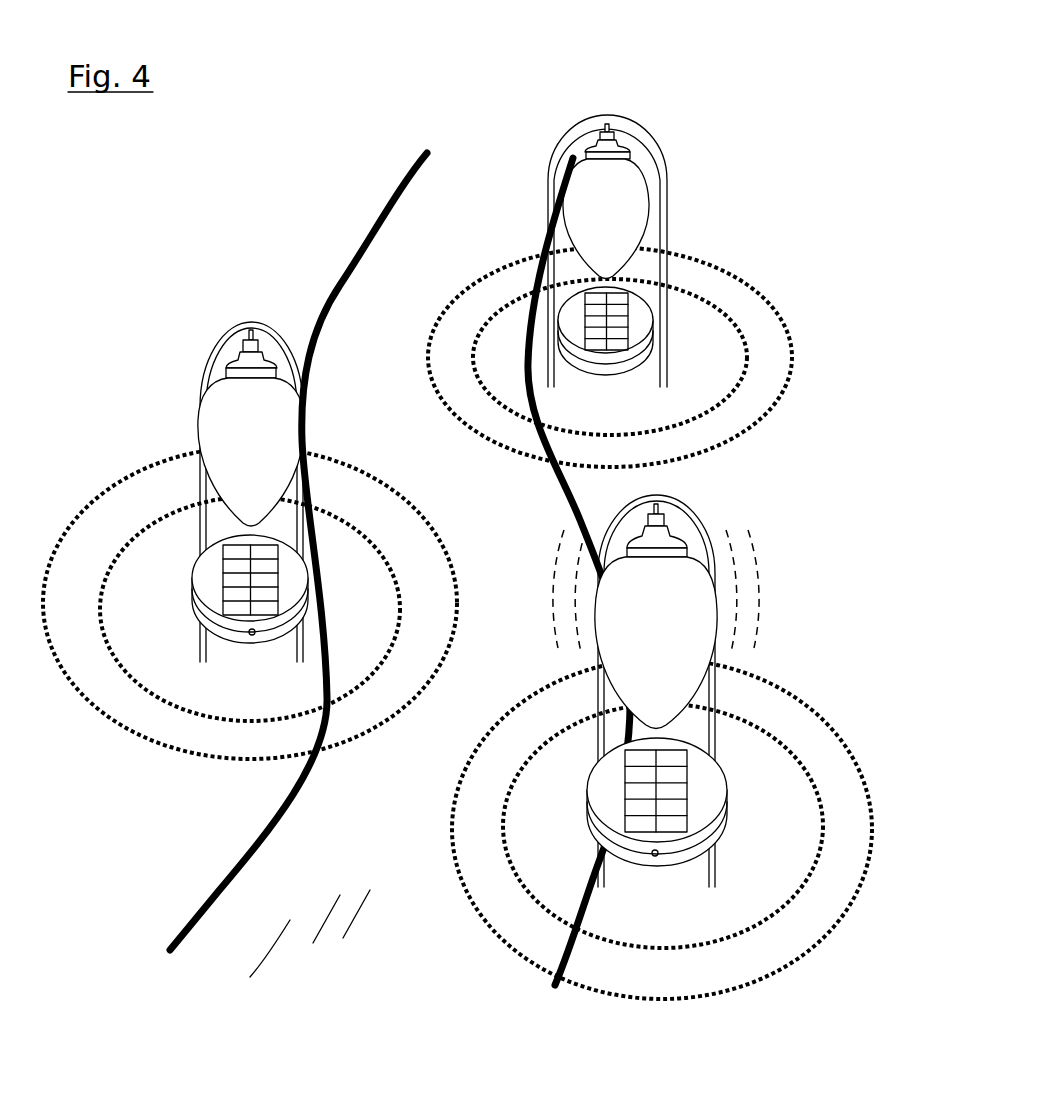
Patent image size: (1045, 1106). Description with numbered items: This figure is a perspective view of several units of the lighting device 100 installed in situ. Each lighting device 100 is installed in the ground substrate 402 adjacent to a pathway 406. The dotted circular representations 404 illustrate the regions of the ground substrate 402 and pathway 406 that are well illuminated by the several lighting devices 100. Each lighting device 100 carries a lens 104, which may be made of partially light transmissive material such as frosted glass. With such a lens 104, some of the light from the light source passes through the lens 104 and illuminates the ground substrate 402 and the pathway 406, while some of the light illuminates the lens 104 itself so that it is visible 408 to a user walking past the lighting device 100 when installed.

The lighting device 100 is at (533, 506).
The lens 104 is at (633, 187).
The ground substrate 402 is at (722, 892).
The dotted circular representations 404 is at (397, 283).
The pathway 406 is at (485, 290).
The visible lens illumination 408 is at (765, 573).